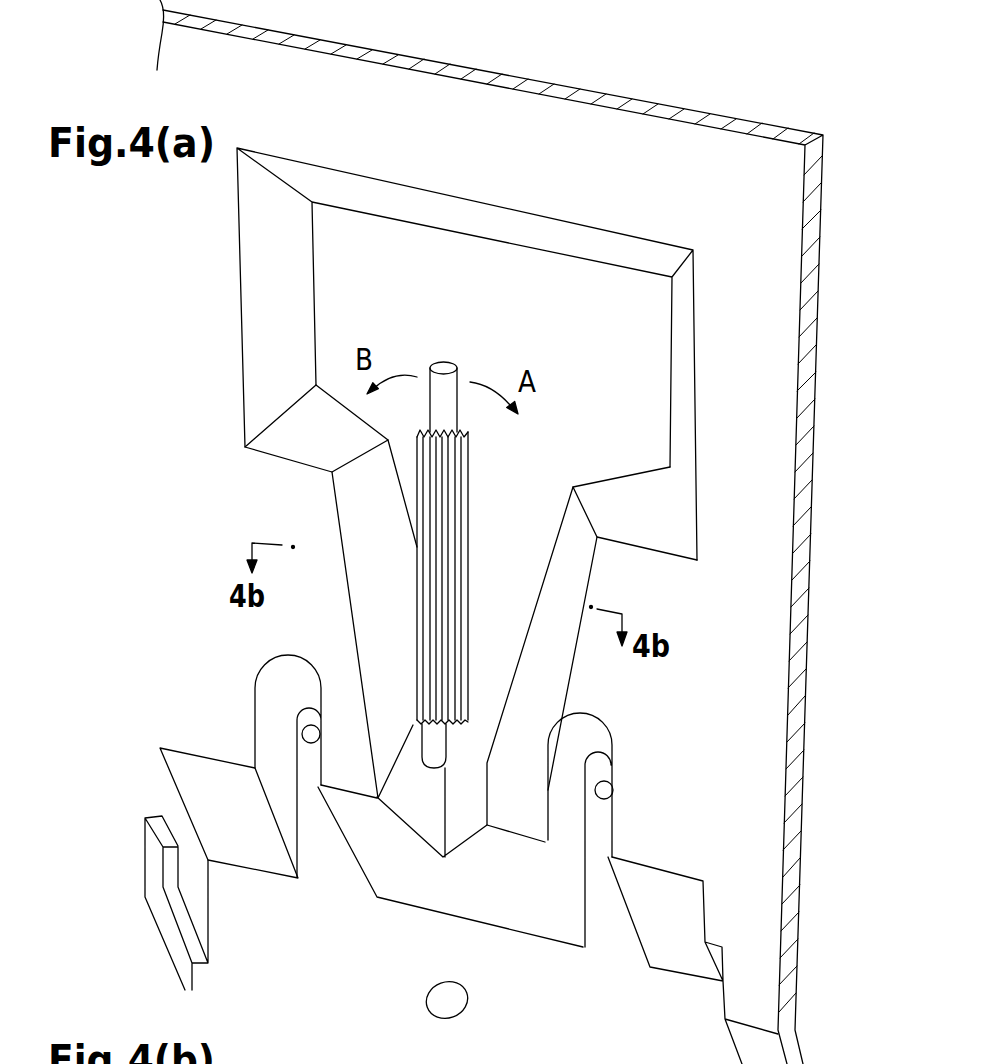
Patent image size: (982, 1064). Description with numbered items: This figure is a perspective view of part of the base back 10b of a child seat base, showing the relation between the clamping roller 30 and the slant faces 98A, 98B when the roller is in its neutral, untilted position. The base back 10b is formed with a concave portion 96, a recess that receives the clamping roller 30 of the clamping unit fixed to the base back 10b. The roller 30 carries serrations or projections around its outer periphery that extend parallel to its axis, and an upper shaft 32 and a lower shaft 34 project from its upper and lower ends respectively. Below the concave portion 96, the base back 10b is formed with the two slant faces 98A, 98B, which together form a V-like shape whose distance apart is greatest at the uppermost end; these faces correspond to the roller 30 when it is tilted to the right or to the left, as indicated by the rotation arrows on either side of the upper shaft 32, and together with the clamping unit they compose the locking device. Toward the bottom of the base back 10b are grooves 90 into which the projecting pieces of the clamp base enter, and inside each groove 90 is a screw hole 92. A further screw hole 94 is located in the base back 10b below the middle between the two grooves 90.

The base back 10b is at (763, 453).
The concave portion 96 is at (568, 277).
The slant face 98A is at (530, 647).
The slant face 98B is at (373, 608).
The upper shaft 32 is at (460, 372).
The clamping roller 30 is at (467, 534).
The lower shaft 34 is at (432, 768).
The groove 90 is at (312, 830).
The screw hole 92 is at (305, 730).
The screw hole 94 is at (460, 1003).